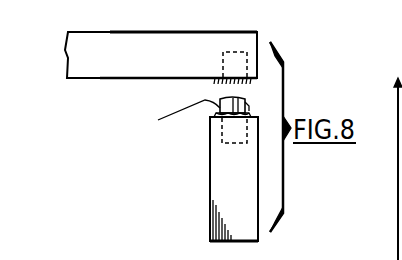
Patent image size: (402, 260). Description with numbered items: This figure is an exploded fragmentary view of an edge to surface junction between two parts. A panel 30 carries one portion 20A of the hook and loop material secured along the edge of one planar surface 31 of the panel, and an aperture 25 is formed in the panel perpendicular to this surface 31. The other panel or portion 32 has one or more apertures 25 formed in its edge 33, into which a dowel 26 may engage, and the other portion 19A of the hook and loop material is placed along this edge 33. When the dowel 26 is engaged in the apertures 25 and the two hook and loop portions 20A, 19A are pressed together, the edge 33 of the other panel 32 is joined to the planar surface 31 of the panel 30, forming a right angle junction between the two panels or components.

The panel 30 is at (131, 62).
The planar surface 31 is at (157, 80).
The aperture 25 is at (232, 52).
The dowel 26 is at (179, 119).
The portion of the hook and loop material 20A is at (208, 96).
The other portion of the hook and loop material 19A is at (213, 117).
The edge 33 is at (262, 106).
The other panel or portion 32 is at (223, 188).